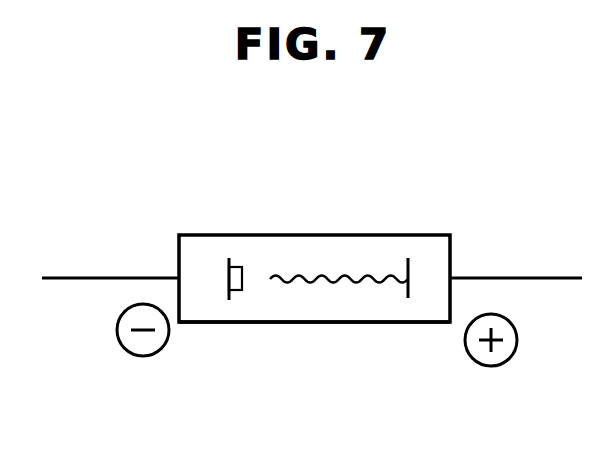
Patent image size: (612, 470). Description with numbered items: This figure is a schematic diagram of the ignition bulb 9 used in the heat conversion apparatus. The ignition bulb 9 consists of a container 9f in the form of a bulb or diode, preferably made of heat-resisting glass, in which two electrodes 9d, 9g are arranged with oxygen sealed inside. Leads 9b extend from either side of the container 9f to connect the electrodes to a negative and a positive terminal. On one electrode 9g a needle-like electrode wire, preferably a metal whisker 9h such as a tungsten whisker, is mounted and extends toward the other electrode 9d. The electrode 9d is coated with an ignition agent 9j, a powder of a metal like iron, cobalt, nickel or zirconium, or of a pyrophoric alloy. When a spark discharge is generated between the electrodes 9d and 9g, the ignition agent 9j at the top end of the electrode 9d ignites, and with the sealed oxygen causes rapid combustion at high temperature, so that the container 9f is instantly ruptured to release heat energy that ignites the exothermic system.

The ignition bulb 9 is at (182, 218).
The leads 9b is at (79, 278).
The electrode 9d is at (236, 265).
The metal whisker 9h is at (365, 280).
The electrode 9g is at (407, 262).
The ignition agent 9j is at (239, 292).
The container 9f is at (364, 322).